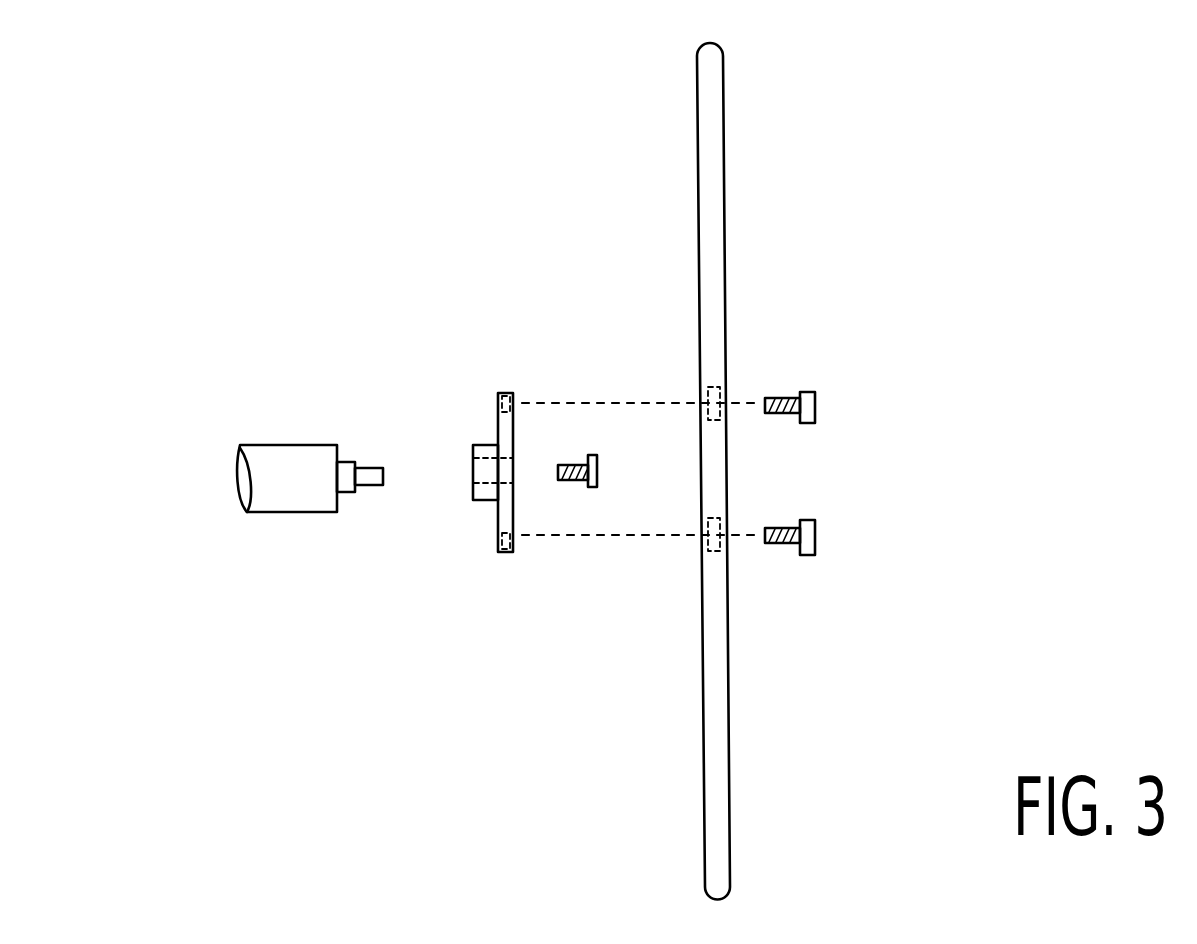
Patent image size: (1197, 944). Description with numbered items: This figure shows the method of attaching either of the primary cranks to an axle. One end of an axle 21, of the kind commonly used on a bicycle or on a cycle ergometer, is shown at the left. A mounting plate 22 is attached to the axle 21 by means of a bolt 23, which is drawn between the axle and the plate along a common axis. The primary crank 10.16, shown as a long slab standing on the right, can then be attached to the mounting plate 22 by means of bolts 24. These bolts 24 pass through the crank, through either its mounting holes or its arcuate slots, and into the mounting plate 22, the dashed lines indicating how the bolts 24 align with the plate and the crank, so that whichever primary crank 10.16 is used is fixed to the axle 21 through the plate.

The primary crank 10.16 is at (714, 168).
The axle 21 is at (297, 490).
The mounting plate 22 is at (499, 393).
The bolt 23 is at (582, 481).
The bolts 24 is at (815, 410).